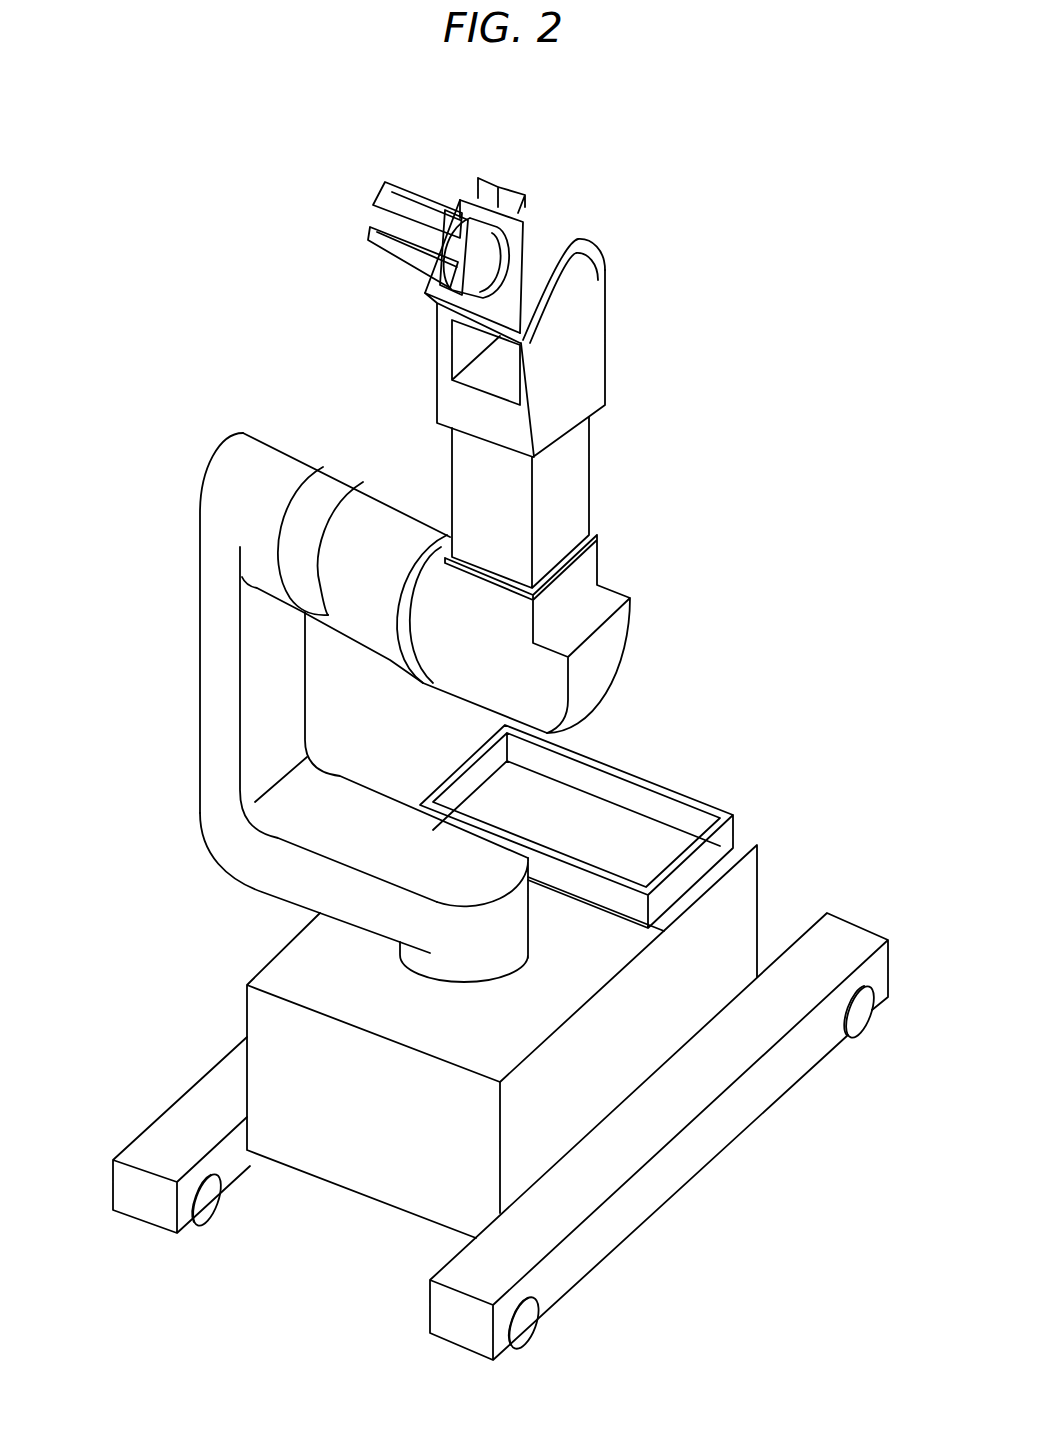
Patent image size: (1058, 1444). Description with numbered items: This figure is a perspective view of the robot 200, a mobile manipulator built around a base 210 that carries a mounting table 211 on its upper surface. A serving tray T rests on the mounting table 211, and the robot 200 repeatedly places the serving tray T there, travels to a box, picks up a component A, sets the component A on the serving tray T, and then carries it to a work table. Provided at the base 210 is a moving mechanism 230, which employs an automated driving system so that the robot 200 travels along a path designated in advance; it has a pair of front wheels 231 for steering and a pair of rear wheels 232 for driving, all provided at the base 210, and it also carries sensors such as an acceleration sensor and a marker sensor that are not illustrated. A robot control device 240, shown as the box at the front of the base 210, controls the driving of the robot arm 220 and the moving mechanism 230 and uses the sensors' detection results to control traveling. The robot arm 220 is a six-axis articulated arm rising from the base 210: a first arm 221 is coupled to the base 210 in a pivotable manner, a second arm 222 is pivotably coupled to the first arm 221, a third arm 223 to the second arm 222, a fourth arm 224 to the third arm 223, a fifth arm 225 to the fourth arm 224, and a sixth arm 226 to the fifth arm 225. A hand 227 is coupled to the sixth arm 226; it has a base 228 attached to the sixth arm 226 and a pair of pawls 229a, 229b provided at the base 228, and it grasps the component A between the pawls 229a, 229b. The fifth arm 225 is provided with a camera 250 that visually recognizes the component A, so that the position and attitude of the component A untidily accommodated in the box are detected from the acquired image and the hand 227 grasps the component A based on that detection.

The robot 200 is at (127, 166).
The base 210 is at (735, 918).
The mounting table 211 is at (560, 958).
The robot arm 220 is at (190, 683).
The first arm 221 is at (227, 825).
The second arm 222 is at (355, 548).
The third arm 223 is at (612, 640).
The fourth arm 224 is at (577, 478).
The fifth arm 225 is at (525, 280).
The sixth arm 226 is at (500, 255).
The hand 227 is at (400, 263).
The base 228 is at (470, 243).
The pawl 229a is at (403, 187).
The pawl 229b is at (385, 227).
The moving mechanism 230 is at (744, 1162).
The front wheels 231 is at (212, 1205).
The rear wheels 232 is at (862, 1015).
The robot control device 240 is at (350, 1135).
The camera 250 is at (512, 197).
The component A is at (437, 230).
The serving tray T is at (598, 818).